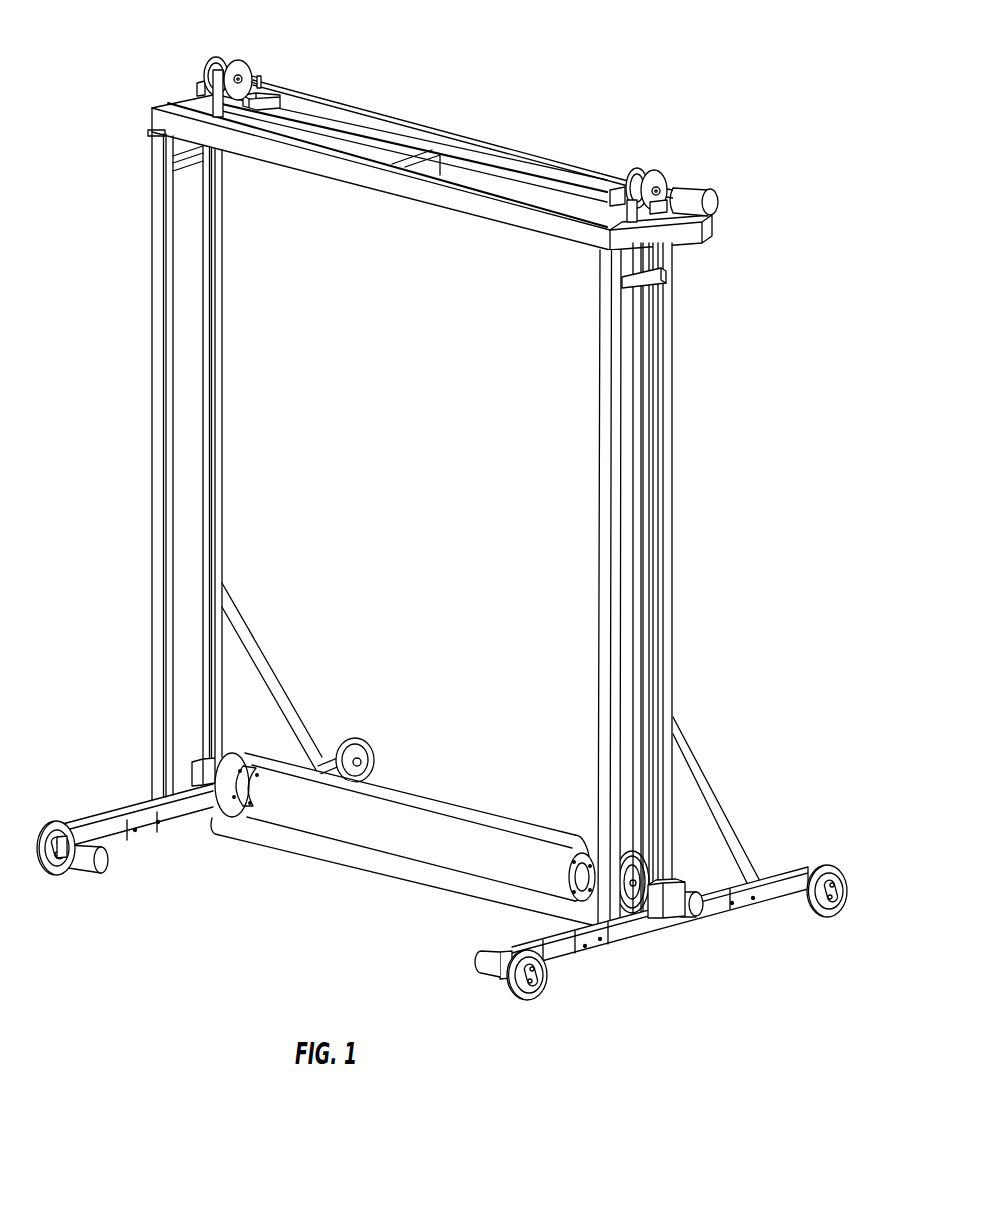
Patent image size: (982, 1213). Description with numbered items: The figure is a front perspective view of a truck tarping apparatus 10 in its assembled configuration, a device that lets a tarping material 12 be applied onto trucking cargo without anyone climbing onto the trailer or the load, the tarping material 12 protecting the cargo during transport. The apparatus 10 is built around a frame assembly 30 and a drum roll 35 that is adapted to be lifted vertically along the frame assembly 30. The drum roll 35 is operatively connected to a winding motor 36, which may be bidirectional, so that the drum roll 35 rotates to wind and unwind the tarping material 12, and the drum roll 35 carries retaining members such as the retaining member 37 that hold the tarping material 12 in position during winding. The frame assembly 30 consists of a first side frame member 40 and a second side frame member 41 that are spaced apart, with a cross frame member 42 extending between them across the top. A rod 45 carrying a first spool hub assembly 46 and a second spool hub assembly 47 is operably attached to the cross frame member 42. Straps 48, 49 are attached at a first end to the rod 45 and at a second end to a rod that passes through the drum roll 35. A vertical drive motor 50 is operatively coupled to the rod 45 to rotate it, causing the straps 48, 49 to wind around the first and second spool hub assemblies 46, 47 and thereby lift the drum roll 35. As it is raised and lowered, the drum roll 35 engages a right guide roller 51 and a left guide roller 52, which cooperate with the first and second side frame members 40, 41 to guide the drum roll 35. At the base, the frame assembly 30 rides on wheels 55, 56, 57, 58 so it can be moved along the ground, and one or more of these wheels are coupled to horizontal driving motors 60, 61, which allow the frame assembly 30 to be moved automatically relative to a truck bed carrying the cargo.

The truck tarping apparatus 10 is at (708, 120).
The tarping material 12 is at (400, 878).
The frame assembly 30 is at (138, 154).
The drum roll 35 is at (425, 807).
The winding motor 36 is at (682, 892).
The retaining member 37 is at (579, 879).
The first side frame member 40 is at (673, 570).
The second side frame member 41 is at (150, 546).
The cross frame member 42 is at (438, 201).
The rod 45 is at (533, 154).
The first spool hub assembly 46 is at (636, 166).
The second spool hub assembly 47 is at (246, 60).
The strap 48 is at (641, 362).
The strap 49 is at (218, 321).
The vertical drive motor 50 is at (694, 192).
The right guide roller 51 is at (680, 885).
The left guide roller 52 is at (193, 770).
The wheel 55 is at (532, 1000).
The wheel 56 is at (840, 868).
The wheel 57 is at (63, 823).
The wheel 58 is at (367, 738).
The horizontal driving motor 60 is at (483, 967).
The horizontal driving motor 61 is at (85, 862).